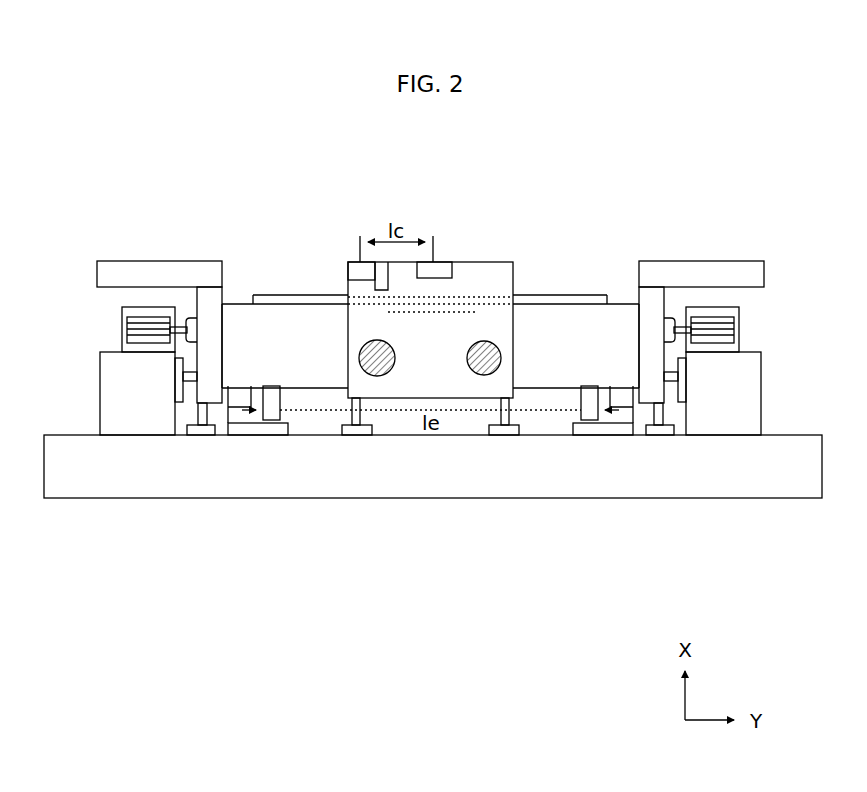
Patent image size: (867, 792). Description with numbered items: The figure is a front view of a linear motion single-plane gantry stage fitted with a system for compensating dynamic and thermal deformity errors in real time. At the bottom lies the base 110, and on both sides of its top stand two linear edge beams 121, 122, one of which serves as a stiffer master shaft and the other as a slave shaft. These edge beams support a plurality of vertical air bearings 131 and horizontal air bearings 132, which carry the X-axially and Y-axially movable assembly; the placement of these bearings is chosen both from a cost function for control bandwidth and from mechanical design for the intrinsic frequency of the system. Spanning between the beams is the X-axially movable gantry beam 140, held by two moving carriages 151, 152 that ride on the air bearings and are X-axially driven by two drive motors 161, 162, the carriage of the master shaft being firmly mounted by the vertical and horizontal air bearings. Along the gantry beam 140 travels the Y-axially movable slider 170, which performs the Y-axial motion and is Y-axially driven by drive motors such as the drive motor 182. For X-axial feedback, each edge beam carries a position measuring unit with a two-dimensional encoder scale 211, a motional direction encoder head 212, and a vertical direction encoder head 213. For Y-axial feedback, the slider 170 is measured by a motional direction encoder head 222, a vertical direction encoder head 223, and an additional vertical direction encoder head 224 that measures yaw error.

The base 110 is at (605, 492).
The linear edge beam 121 is at (100, 397).
The linear edge beam 122 is at (763, 392).
The vertical air bearing 131 is at (498, 430).
The horizontal air bearing 132 is at (177, 380).
The X-axially movable gantry beam 140 is at (235, 303).
The moving carriage 151 is at (158, 261).
The moving carriage 152 is at (701, 261).
The drive motor 161 is at (122, 332).
The drive motor 162 is at (739, 329).
The Y-axially movable slider 170 is at (513, 282).
The drive motor 182 is at (460, 308).
The two-dimensional encoder scale 211 is at (282, 425).
The motional direction encoder head 212 is at (263, 405).
The vertical direction encoder head 213 is at (240, 395).
The motional direction encoder head 222 is at (348, 283).
The vertical direction encoder head 223 is at (352, 262).
The additional vertical direction encoder head 224 is at (443, 264).